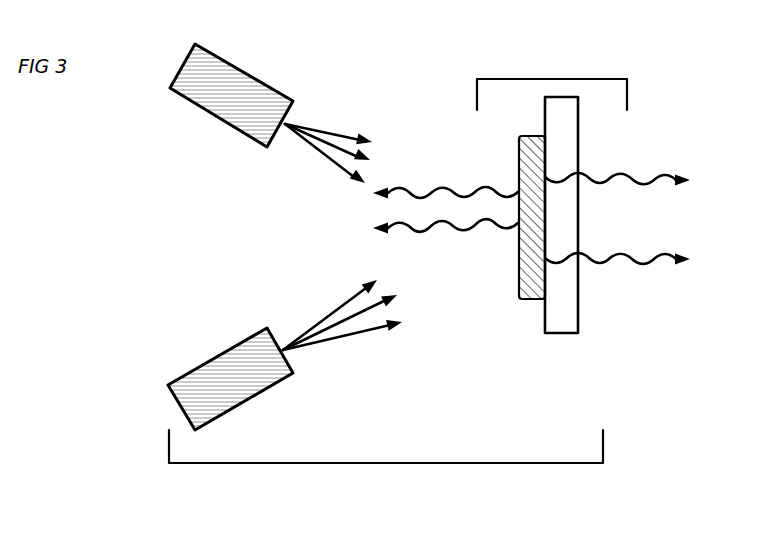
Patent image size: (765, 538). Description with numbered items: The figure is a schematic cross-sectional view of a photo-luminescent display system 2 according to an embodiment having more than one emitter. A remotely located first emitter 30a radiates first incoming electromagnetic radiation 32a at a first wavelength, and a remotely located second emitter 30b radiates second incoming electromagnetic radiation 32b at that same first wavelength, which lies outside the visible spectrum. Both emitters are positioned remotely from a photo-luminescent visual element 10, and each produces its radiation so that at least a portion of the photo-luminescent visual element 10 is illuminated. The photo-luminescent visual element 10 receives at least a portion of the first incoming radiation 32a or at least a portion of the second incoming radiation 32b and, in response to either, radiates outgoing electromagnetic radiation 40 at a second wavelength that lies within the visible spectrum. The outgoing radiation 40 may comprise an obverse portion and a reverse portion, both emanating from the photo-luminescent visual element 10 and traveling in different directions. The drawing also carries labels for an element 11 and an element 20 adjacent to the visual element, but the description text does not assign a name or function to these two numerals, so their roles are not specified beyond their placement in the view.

The photo-luminescent display system 2 is at (386, 463).
The photo-luminescent visual element 10 is at (552, 78).
The absorber layer 11 is at (531, 300).
The substrate plate 20 is at (562, 335).
The first emitter 30a is at (236, 347).
The second emitter 30b is at (233, 127).
The first incoming EM radiation 32a is at (323, 338).
The second incoming EM radiation 32b is at (313, 130).
The outgoing EM radiation 40 is at (500, 187).